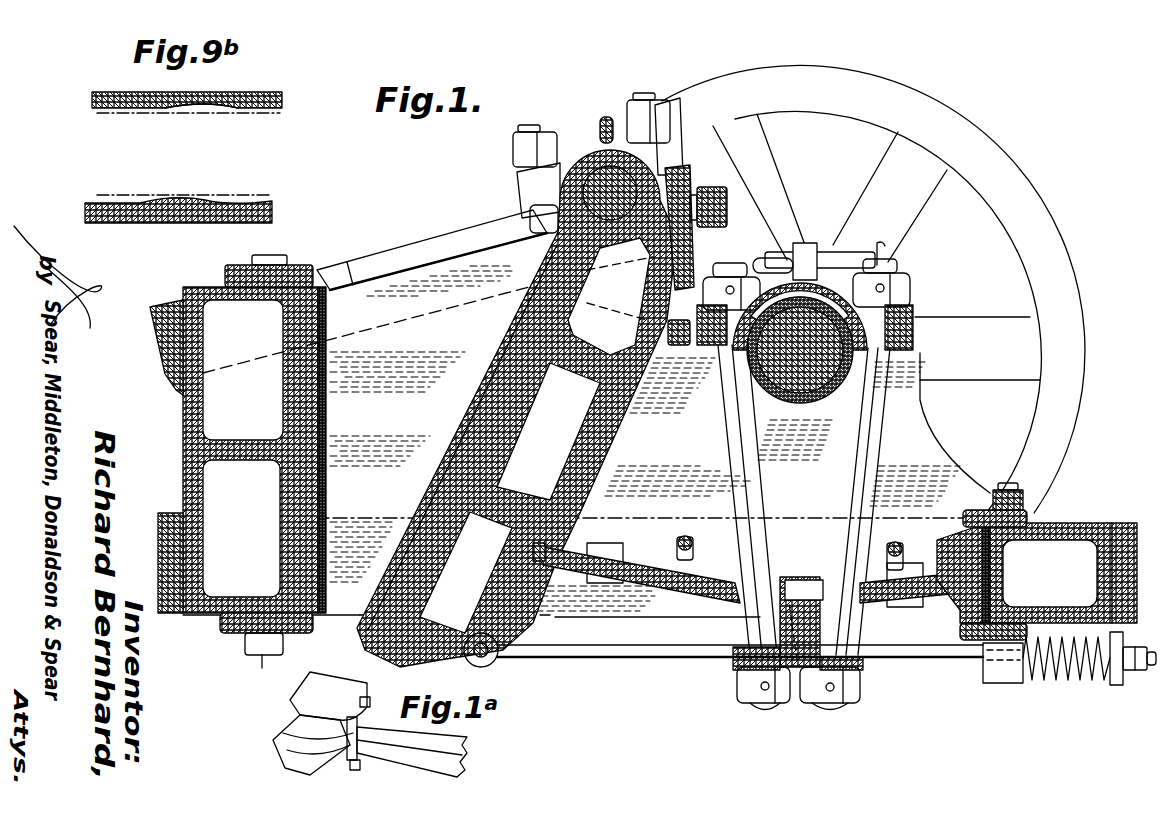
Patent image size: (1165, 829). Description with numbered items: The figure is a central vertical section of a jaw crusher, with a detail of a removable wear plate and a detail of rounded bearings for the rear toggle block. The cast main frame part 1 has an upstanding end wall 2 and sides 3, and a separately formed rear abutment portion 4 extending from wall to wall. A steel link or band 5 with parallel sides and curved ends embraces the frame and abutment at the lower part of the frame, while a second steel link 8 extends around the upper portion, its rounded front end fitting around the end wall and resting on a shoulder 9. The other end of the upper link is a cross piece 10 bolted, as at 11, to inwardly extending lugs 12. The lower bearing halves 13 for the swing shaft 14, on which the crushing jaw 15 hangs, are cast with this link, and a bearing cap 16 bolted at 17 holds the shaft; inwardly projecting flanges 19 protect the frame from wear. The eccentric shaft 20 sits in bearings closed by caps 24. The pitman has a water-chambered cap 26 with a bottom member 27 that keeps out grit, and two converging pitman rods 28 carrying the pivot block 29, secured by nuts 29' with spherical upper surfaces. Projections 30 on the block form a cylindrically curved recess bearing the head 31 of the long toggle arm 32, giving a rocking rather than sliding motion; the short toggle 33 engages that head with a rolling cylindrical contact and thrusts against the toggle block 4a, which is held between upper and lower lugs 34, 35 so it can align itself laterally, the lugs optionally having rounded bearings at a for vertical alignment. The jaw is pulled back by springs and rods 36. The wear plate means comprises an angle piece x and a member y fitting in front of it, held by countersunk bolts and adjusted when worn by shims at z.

In FIG. 1, the main frame part 1 is at (591, 441).
In FIG. 1, the upstanding end wall 2 is at (185, 452).
In FIG. 1, the sides 3 is at (928, 446).
In FIG. 1, the rear abutment portion 4 is at (1037, 548).
In FIG. 9B, the toggle block 4a is at (227, 117).
In FIG. 1, the toggle block 4a is at (970, 557).
In FIG. 1, the steel link or band 5 is at (165, 560).
In FIG. 1, the second band or steel link 8 is at (435, 317).
In FIG. 1, the shoulder 9 is at (172, 388).
In FIG. 1, the cross piece 10 is at (700, 172).
In FIG. 1, the bolts 11 is at (728, 192).
In FIG. 1, the inwardly extending lugs or projections 12 is at (745, 208).
In FIG. 1, the lower halves of the bearings 13 is at (530, 213).
In FIG. 1, the swing shaft 14 is at (596, 178).
In FIG. 1, the crushing jaw 15 is at (510, 408).
In FIG. 1A, the crushing jaw 15 is at (320, 697).
In FIG. 1, the bearing cap 16 is at (530, 186).
In FIG. 1, the bolts 17 is at (523, 157).
In FIG. 1, the inwardly projecting flanges 19 is at (397, 258).
In FIG. 1, the eccentric shaft 20 is at (790, 372).
In FIG. 1, the caps 24 is at (913, 343).
In FIG. 1, the cap 26 is at (915, 312).
In FIG. 1, the bottom member 27 is at (762, 383).
In FIG. 1, the pitman rods 28 is at (738, 503).
In FIG. 1, the pivot block 29 is at (823, 702).
In FIG. 1, the nuts 29' is at (800, 702).
In FIG. 1, the projections 30 is at (773, 637).
In FIG. 1, the head of the long toggle arm 31 is at (793, 583).
In FIG. 1, the long toggle arm 32 is at (648, 570).
In FIG. 1A, the long toggle arm 32 is at (450, 755).
In FIG. 1, the short toggle 33 is at (917, 577).
In FIG. 9B, the upper lug 34 is at (263, 104).
In FIG. 1, the upper lug 34 is at (980, 517).
In FIG. 9B, the lower lug 35 is at (247, 207).
In FIG. 1, the lower lug 35 is at (970, 643).
In FIG. 1, the springs and rods 36 is at (610, 647).
In FIG. 9B, the rounded bearings a is at (170, 110).
In FIG. 1A, the angle piece x is at (290, 733).
In FIG. 1A, the member y is at (297, 750).
In FIG. 1A, the shims z is at (370, 753).